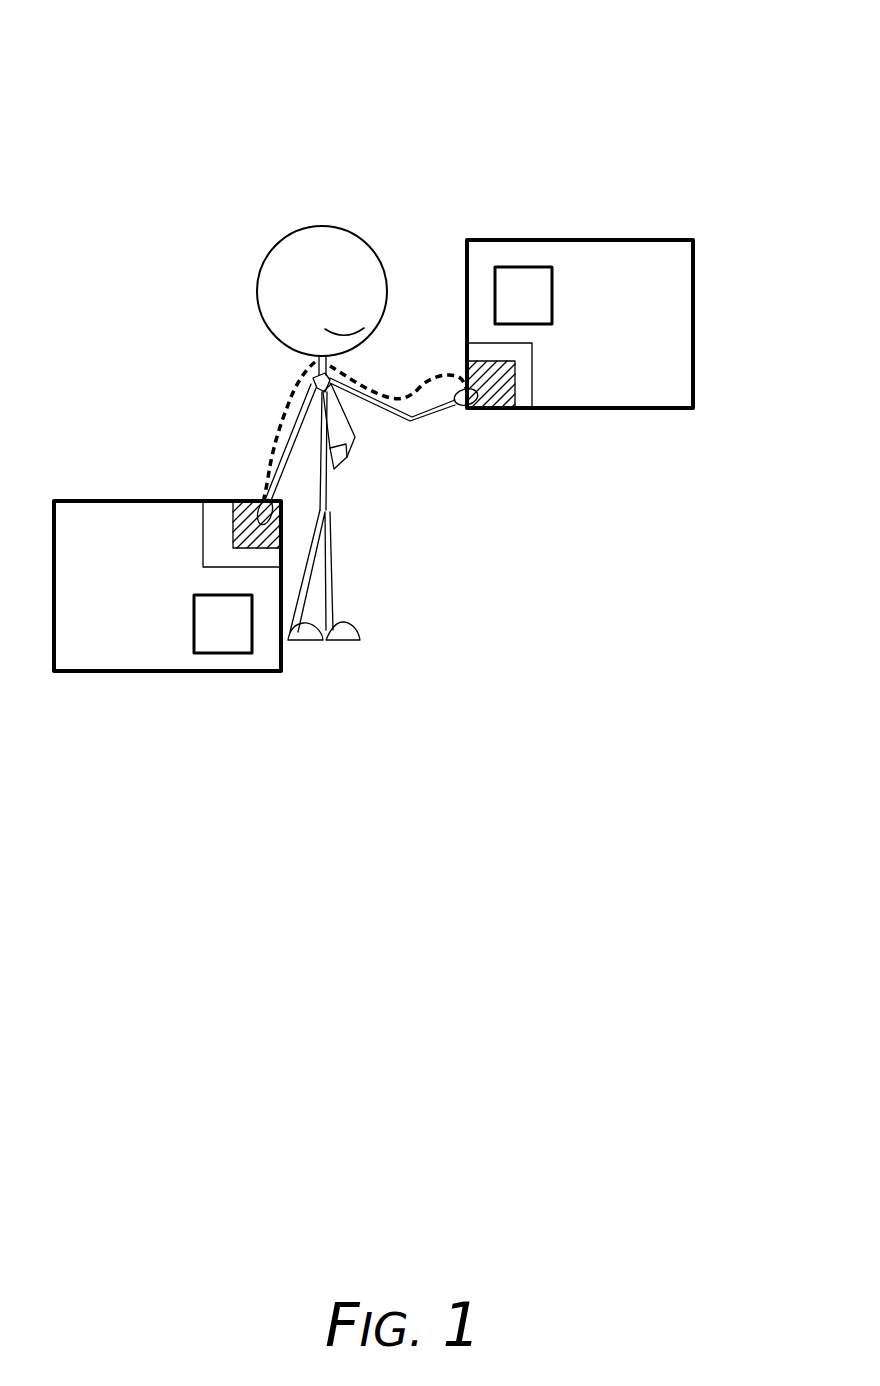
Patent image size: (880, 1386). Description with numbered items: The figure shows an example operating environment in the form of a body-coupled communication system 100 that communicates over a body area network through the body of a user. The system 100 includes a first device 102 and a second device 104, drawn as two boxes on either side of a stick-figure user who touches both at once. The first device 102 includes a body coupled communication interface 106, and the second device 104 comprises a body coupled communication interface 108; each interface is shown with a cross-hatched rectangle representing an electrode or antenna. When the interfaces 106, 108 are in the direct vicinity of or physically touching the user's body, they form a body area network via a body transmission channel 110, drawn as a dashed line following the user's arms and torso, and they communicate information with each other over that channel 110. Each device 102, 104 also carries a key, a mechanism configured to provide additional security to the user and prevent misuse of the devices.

The body-coupled communication system 100 is at (604, 68).
The first device 102 is at (125, 500).
The second device 104 is at (580, 238).
The body coupled communication interface 106 is at (203, 537).
The body coupled communication interface 108 is at (533, 377).
The body transmission channel 110 is at (280, 418).